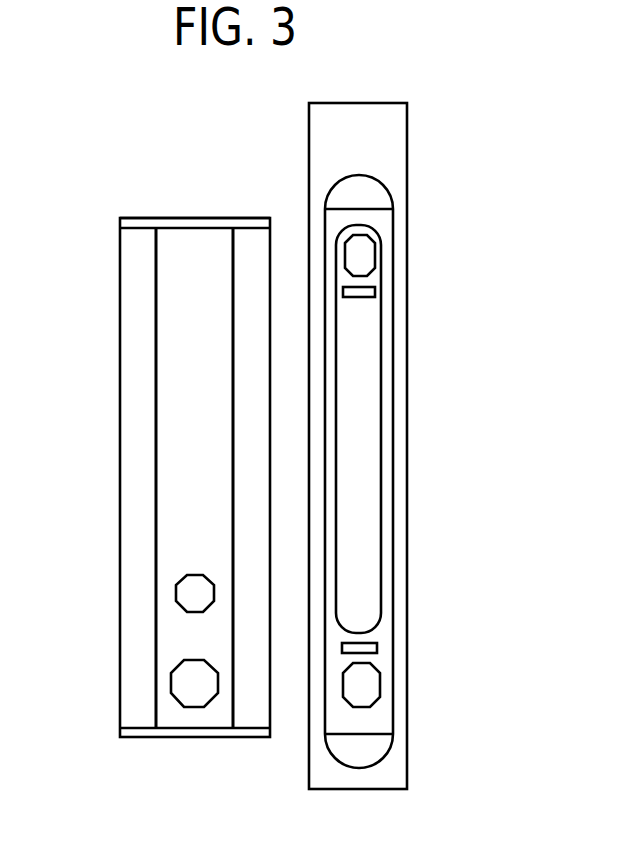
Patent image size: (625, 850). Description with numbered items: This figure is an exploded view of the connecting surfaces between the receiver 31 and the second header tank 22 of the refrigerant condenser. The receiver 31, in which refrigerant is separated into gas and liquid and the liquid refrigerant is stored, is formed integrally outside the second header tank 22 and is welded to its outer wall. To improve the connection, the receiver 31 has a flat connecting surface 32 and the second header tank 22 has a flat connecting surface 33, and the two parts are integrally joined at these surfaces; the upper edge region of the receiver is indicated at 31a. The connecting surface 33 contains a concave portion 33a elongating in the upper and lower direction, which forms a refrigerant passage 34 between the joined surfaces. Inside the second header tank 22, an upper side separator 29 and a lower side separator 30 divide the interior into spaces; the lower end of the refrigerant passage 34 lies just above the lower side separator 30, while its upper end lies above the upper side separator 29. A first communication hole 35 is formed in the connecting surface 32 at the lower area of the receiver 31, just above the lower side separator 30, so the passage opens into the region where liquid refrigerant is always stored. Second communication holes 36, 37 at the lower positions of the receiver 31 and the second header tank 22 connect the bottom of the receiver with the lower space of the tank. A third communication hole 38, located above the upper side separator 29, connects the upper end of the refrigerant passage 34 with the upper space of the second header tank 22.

The second header tank 22 is at (407, 145).
The upper side separator 29 is at (366, 297).
The lower side separator 30 is at (360, 643).
The receiver 31 is at (120, 275).
The flange of cover plate 31a is at (138, 218).
The connecting surface 32 is at (188, 248).
The connecting surface 33 is at (387, 407).
The concave portion 33a is at (380, 455).
The refrigerant passage 34 is at (368, 500).
The first communication hole 35 is at (185, 593).
The second communication hole 36 is at (183, 683).
The second communication hole 37 is at (367, 688).
The third communication hole 38 is at (363, 253).